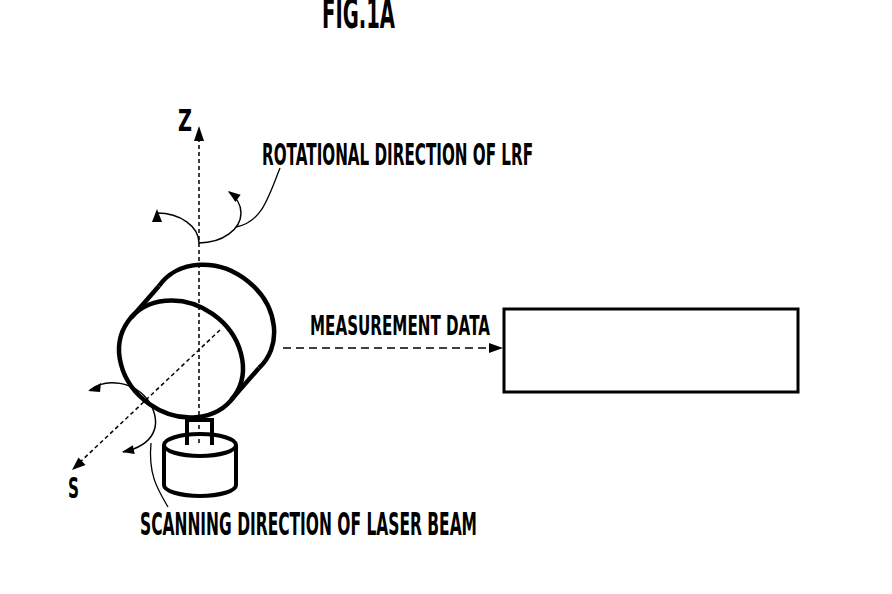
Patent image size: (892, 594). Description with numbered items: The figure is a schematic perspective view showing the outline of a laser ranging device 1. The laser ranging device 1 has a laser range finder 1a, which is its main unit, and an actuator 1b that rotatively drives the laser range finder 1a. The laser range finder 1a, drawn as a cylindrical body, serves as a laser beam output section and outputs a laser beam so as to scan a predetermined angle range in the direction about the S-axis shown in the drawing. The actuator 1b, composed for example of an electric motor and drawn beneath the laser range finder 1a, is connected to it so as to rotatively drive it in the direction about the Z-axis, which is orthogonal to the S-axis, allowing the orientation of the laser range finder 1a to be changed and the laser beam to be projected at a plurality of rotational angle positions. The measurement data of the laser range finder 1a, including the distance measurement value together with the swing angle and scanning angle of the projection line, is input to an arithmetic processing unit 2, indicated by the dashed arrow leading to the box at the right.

The laser ranging device 1 is at (103, 292).
The laser range finder 1a is at (237, 287).
The actuator 1b is at (238, 456).
The arithmetic processing unit 2 is at (543, 309).